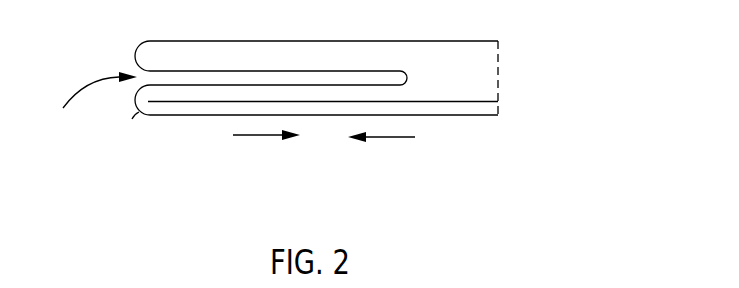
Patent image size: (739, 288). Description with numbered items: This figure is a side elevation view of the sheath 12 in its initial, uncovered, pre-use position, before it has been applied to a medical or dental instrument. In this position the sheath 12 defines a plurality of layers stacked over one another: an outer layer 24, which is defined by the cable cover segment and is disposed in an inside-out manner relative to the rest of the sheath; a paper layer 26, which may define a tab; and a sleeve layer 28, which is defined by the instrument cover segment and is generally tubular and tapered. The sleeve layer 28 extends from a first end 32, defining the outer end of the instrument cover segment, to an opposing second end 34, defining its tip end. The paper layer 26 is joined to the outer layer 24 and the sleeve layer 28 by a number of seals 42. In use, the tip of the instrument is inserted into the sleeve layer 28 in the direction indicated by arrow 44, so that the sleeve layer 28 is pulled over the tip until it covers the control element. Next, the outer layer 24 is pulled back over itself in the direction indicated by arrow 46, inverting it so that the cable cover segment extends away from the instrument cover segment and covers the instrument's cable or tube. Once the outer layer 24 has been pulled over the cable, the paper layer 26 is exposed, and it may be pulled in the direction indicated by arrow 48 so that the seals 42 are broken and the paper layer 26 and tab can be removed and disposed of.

The sheath 12 is at (348, 101).
The outer layer 24 is at (450, 52).
The paper layer 26 is at (435, 102).
The sleeve layer 28 is at (367, 71).
The first end 32 is at (140, 145).
The second end 34 is at (506, 151).
The seals 42 is at (132, 119).
The arrow 44 is at (87, 84).
The arrow 46 is at (393, 138).
The arrow 48 is at (275, 138).